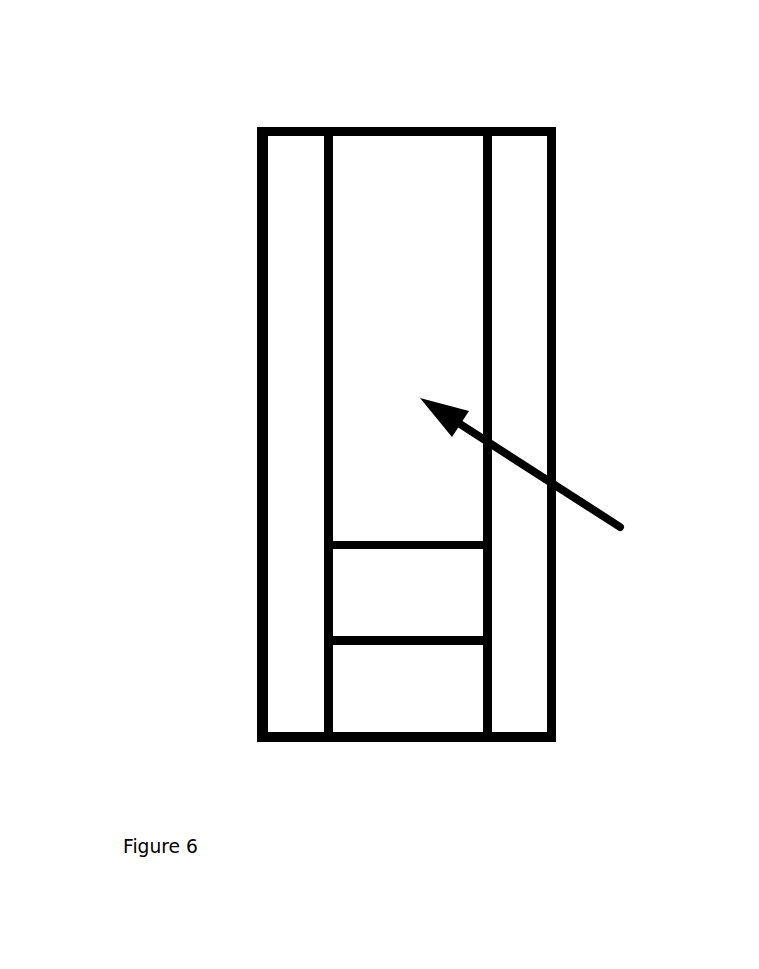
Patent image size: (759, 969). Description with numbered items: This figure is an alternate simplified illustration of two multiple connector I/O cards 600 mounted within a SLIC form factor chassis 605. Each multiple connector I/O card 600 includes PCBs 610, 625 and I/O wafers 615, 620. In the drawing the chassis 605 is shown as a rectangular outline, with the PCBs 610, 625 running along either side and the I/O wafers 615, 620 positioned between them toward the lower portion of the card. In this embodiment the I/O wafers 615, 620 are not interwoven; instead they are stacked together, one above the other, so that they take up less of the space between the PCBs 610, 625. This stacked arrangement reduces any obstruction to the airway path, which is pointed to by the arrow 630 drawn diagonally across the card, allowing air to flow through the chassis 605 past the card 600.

The multiple connector I/O card 600 is at (153, 172).
The SLIC form factor chassis 605 is at (383, 128).
The PCB 610 is at (297, 336).
The I/O wafer 615 is at (372, 595).
The I/O wafer 620 is at (453, 669).
The PCB 625 is at (520, 303).
The arrow 630 is at (560, 482).